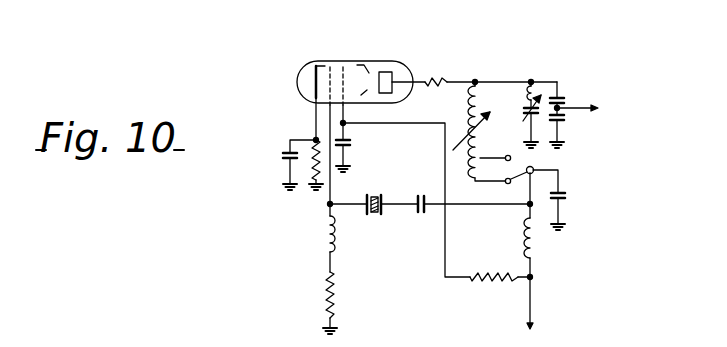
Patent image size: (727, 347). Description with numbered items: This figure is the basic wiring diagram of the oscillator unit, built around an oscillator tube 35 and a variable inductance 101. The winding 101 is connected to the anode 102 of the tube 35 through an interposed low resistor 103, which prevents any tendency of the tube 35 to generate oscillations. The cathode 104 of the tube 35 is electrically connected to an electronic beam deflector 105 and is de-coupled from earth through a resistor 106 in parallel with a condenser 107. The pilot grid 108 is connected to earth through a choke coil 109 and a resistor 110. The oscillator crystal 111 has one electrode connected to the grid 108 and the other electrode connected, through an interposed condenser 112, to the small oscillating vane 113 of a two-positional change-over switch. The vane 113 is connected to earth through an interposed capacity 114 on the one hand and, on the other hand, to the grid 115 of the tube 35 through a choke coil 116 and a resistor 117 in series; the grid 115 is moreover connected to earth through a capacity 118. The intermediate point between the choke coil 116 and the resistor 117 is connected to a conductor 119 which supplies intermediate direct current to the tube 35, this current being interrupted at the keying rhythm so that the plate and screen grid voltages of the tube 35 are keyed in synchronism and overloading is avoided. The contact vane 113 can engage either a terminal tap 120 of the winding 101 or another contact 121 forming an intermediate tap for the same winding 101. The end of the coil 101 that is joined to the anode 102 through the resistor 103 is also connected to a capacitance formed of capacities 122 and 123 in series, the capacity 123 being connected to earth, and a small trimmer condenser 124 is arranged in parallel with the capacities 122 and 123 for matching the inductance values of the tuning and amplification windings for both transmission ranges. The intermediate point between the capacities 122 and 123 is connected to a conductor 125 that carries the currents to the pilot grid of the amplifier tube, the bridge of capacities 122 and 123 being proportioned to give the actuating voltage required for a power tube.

The oscillator tube 35 is at (394, 77).
The variable inductance 101 is at (478, 85).
The anode 102 is at (396, 84).
The low resistor 103 is at (436, 86).
The cathode 104 is at (300, 76).
The electronic beam deflector 105 is at (370, 65).
The resistor 106 is at (316, 138).
The condenser 107 is at (285, 153).
The pilot grid 108 is at (332, 64).
The choke coil 109 is at (325, 237).
The resistor 110 is at (325, 292).
The oscillator crystal 111 is at (372, 217).
The condenser 112 is at (419, 217).
The oscillating vane 113 is at (521, 191).
The capacity 114 is at (565, 191).
The grid 115 is at (349, 64).
The choke coil 116 is at (538, 248).
The resistor 117 is at (497, 281).
The capacity 118 is at (352, 143).
The conductor 119 is at (533, 300).
The terminal tap 120 is at (495, 169).
The contact 121 is at (485, 131).
The capacity 122 is at (562, 99).
The capacity 123 is at (568, 110).
The trimmer condenser 124 is at (543, 90).
The conductor 125 is at (589, 109).